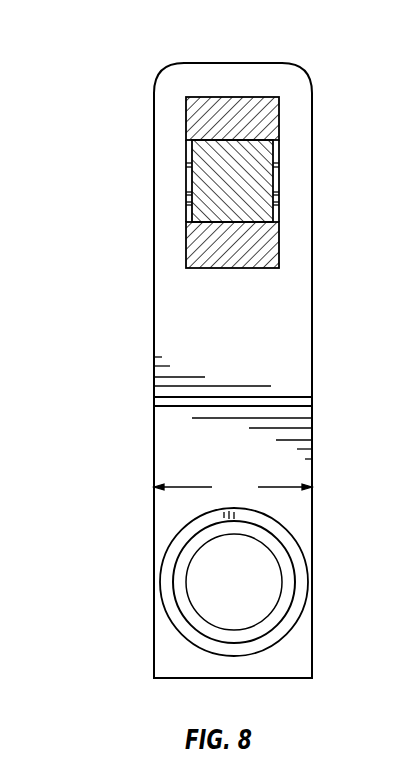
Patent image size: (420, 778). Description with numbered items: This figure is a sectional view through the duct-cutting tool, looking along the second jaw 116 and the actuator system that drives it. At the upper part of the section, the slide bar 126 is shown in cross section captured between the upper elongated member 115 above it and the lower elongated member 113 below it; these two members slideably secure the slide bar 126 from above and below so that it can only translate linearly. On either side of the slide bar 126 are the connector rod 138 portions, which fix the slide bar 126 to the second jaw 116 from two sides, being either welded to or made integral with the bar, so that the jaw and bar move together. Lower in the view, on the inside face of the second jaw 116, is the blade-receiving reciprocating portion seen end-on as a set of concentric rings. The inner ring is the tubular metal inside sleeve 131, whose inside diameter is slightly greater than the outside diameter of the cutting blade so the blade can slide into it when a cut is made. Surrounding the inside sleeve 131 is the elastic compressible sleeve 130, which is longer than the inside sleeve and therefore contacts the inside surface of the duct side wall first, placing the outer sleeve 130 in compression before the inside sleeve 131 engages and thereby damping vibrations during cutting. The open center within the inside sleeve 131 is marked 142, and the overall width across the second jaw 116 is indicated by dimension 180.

The lower elongated member 113 is at (245, 262).
The upper elongated member 115 is at (234, 97).
The second jaw 116 is at (254, 365).
The slide bar 126 is at (277, 218).
The connector rod 138 is at (188, 178).
The elastic compressible sleeve 130 is at (293, 562).
The inside sleeve 131 is at (180, 577).
The opening 142 is at (265, 592).
The width dimension 180 is at (233, 487).